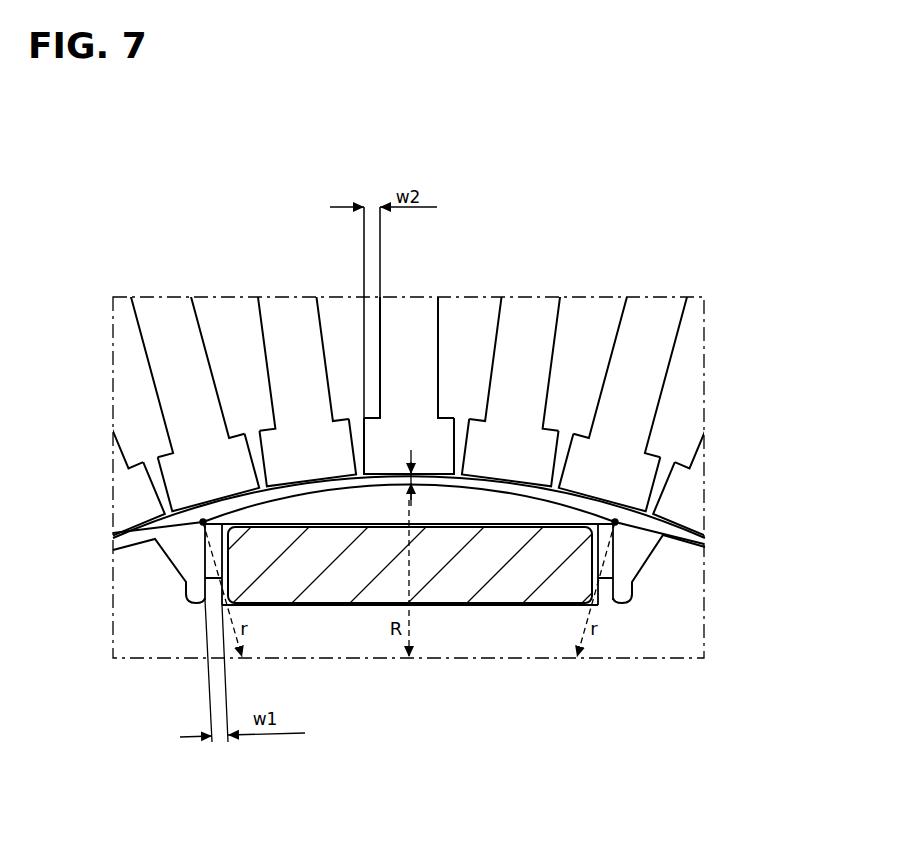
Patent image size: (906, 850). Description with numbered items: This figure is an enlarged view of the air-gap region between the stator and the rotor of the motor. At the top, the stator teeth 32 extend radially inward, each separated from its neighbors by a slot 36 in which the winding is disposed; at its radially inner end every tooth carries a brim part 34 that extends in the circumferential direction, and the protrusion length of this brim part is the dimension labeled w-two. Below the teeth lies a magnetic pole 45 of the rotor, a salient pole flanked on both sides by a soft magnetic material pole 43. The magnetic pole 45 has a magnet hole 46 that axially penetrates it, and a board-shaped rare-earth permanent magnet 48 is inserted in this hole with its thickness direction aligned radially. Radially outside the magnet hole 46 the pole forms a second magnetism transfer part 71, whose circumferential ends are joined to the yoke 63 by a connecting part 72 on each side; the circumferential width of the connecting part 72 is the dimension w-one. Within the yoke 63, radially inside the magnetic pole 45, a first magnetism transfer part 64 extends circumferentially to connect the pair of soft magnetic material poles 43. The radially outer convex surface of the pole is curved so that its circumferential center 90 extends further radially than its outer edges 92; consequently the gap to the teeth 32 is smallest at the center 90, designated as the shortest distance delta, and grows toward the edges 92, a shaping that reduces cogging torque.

The teeth 32 is at (160, 325).
The brim part 34 is at (363, 447).
The slot 36 is at (230, 330).
The magnetic pole 45 is at (507, 482).
The second magnetism transfer part 71 is at (525, 505).
The connecting part 72 is at (213, 553).
The outer edges 92 is at (203, 522).
The soft magnetic material pole 43 is at (135, 574).
The permanent magnet 48 is at (407, 590).
The yoke 63 is at (347, 642).
The first magnetism transfer part 64 is at (484, 630).
The magnet hole 46 is at (595, 556).
The center 90 is at (412, 487).